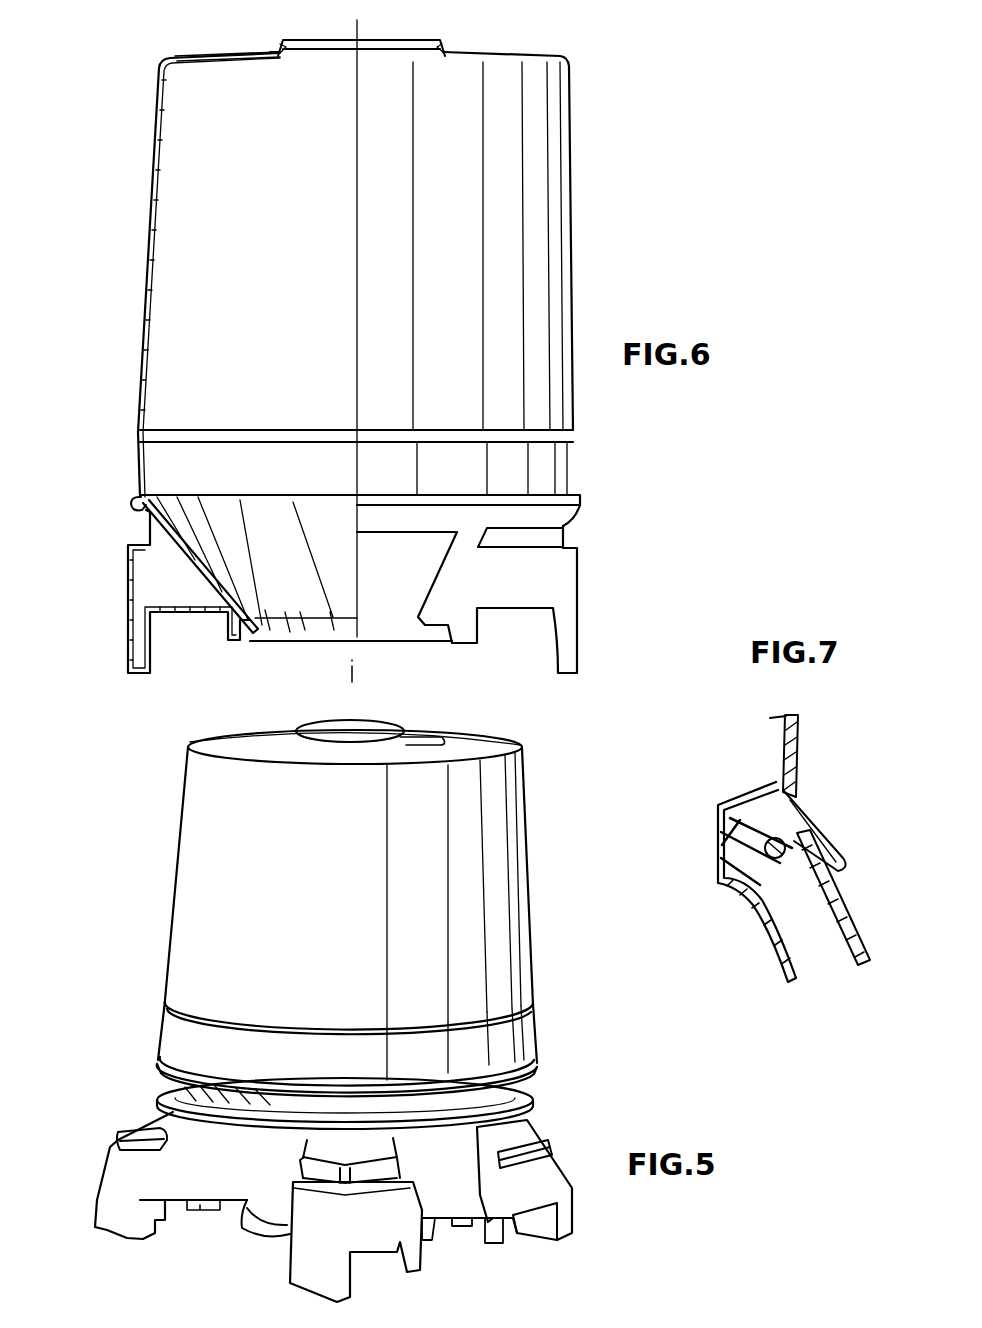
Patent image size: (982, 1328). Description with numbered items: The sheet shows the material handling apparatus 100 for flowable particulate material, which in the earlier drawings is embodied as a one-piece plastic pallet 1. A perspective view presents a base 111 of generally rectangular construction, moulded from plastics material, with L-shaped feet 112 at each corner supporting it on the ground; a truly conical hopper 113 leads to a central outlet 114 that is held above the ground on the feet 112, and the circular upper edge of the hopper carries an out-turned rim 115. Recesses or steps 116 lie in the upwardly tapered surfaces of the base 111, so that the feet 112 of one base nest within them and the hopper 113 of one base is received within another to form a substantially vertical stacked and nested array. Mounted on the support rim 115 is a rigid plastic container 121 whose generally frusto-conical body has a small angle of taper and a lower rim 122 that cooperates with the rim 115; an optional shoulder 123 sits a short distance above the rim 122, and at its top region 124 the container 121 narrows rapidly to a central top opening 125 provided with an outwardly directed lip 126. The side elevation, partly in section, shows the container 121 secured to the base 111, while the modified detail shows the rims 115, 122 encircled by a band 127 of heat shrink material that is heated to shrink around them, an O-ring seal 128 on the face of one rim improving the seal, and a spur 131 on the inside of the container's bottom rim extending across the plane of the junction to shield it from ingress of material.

In FIG. 6, the pallet 1 is at (122, 603).
In FIG. 6, the material handling apparatus 100 is at (578, 295).
In FIG. 5, the material handling apparatus 100 is at (168, 876).
In FIG. 7, the base 111 is at (826, 952).
In FIG. 5, the base 111 is at (233, 1235).
In FIG. 6, the feet 112 is at (183, 613).
In FIG. 5, the feet 112 is at (105, 1233).
In FIG. 6, the conical hopper 113 is at (190, 548).
In FIG. 7, the conical hopper 113 is at (853, 918).
In FIG. 5, the conical hopper 113 is at (170, 1093).
In FIG. 6, the central outlet 114 is at (287, 633).
In FIG. 5, the central outlet 114 is at (267, 1247).
In FIG. 5, the out-turned rim 115 is at (538, 1110).
In FIG. 5, the recesses or steps 116 is at (120, 1130).
In FIG. 7, the container 121 is at (800, 731).
In FIG. 5, the container 121 is at (528, 880).
In FIG. 5, the lower rim 122 is at (536, 1067).
In FIG. 6, the shoulder 123 is at (585, 430).
In FIG. 5, the shoulder 123 is at (531, 1003).
In FIG. 6, the top region 124 is at (217, 60).
In FIG. 5, the top region 124 is at (242, 748).
In FIG. 6, the central top opening 125 is at (434, 44).
In FIG. 5, the central top opening 125 is at (388, 723).
In FIG. 6, the outwardly directed lip 126 is at (279, 43).
In FIG. 5, the outwardly directed lip 126 is at (448, 737).
In FIG. 6, the band 127 is at (134, 499).
In FIG. 7, the band 127 is at (740, 797).
In FIG. 7, the O-ring seal 128 is at (786, 840).
In FIG. 7, the spur 131 is at (824, 860).